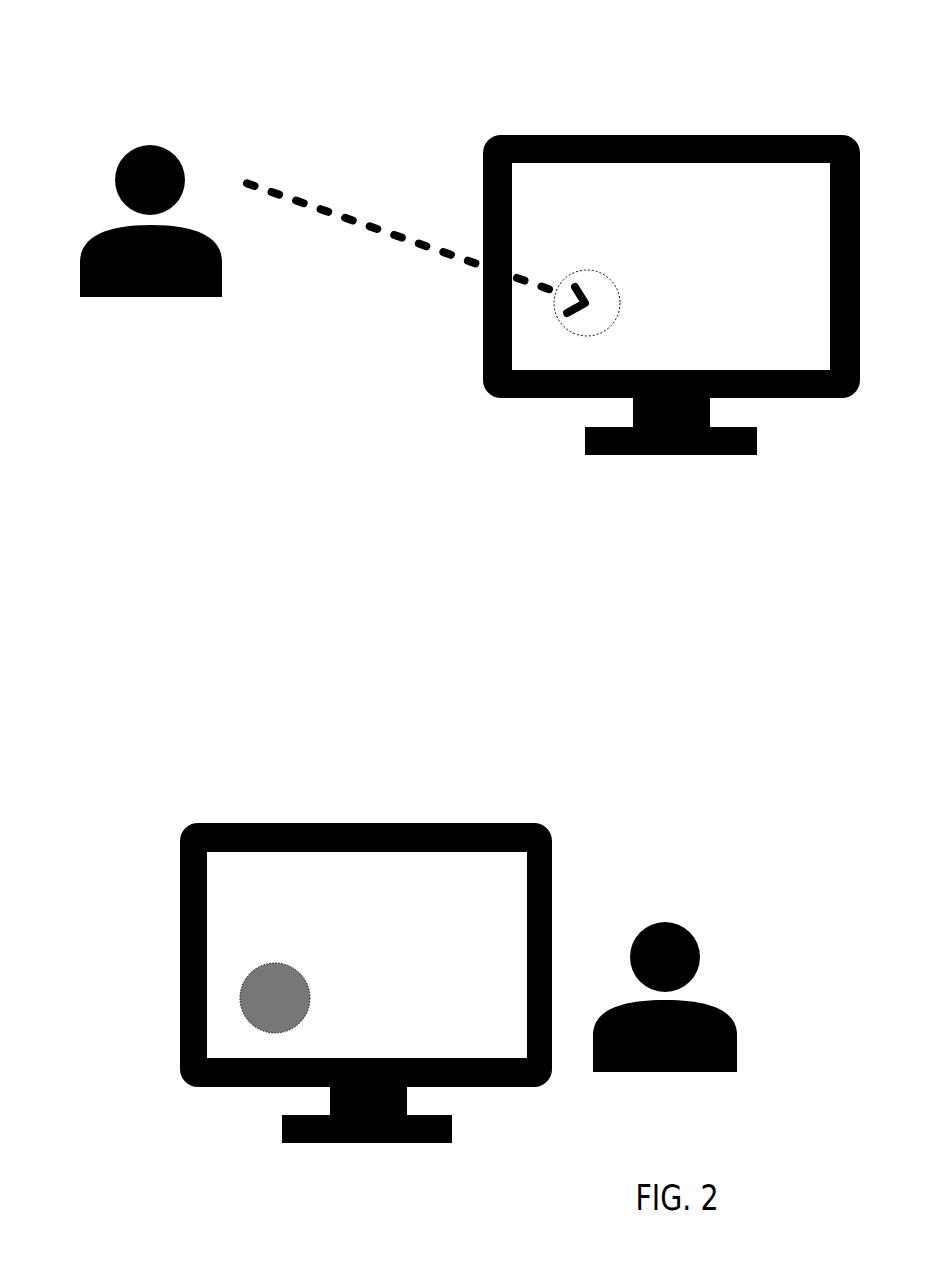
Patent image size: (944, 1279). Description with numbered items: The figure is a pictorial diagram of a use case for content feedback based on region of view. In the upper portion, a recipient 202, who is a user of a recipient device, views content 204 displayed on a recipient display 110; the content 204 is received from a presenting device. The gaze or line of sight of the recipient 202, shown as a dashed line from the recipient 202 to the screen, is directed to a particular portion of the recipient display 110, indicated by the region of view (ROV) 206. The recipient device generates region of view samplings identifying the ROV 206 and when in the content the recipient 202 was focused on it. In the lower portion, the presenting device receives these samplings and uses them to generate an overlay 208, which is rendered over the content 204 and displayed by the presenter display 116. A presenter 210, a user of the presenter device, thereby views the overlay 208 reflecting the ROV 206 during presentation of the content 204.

The recipient display 110 is at (613, 136).
The presenter display 116 is at (263, 823).
The recipient 202 is at (128, 377).
The content 204 is at (352, 937).
The region of view (ROV) 206 is at (575, 322).
The overlay 208 is at (272, 1002).
The presenter 210 is at (661, 879).